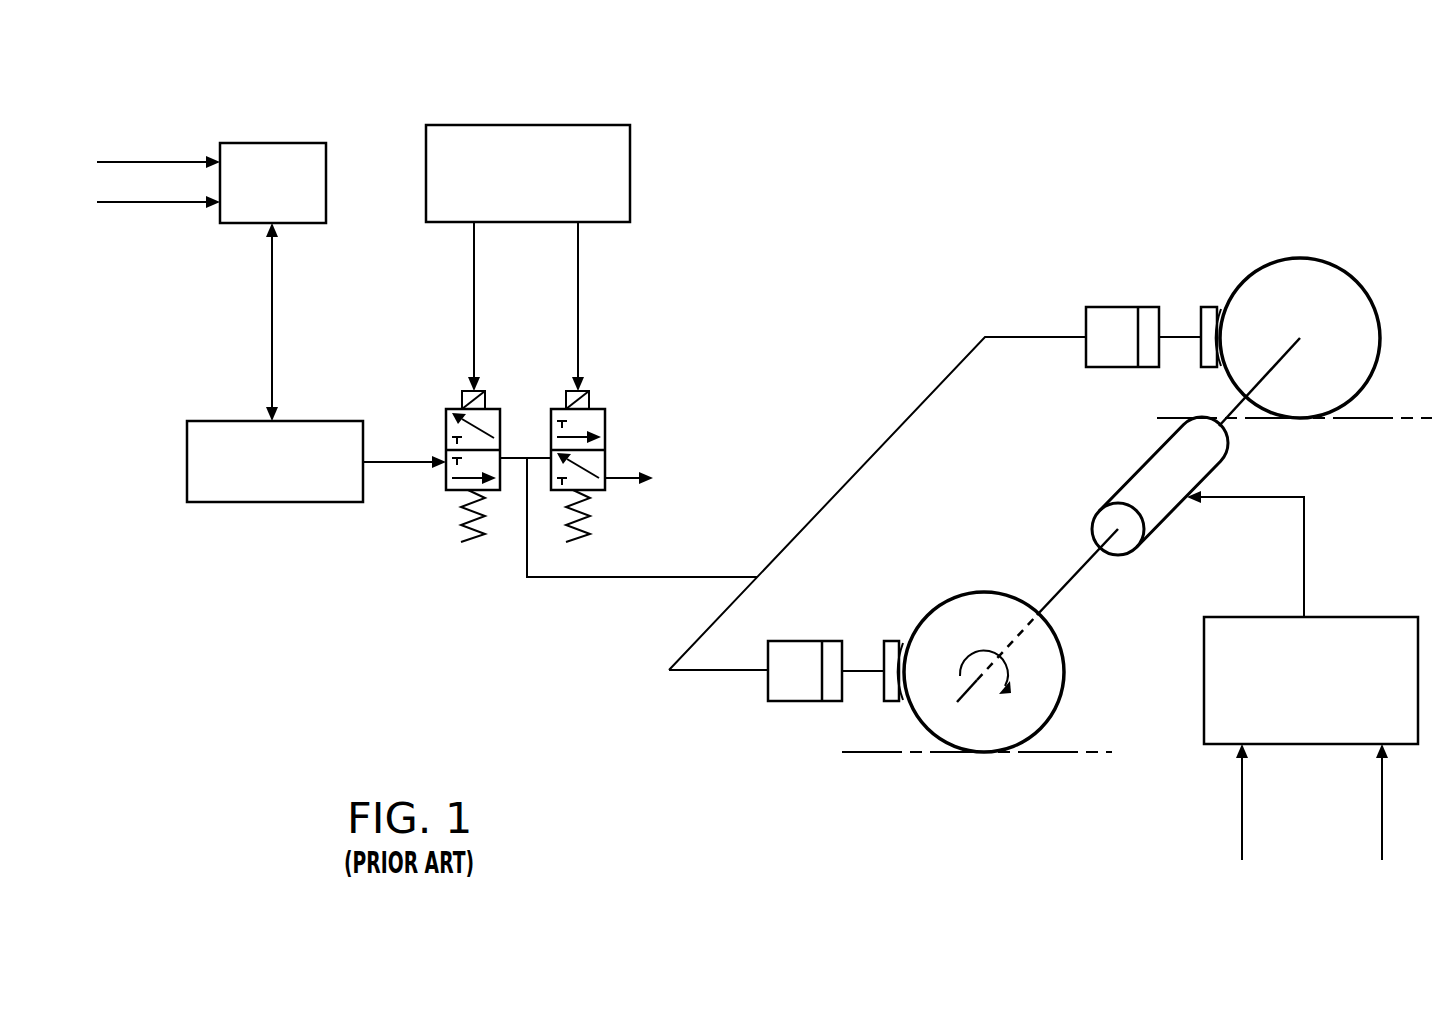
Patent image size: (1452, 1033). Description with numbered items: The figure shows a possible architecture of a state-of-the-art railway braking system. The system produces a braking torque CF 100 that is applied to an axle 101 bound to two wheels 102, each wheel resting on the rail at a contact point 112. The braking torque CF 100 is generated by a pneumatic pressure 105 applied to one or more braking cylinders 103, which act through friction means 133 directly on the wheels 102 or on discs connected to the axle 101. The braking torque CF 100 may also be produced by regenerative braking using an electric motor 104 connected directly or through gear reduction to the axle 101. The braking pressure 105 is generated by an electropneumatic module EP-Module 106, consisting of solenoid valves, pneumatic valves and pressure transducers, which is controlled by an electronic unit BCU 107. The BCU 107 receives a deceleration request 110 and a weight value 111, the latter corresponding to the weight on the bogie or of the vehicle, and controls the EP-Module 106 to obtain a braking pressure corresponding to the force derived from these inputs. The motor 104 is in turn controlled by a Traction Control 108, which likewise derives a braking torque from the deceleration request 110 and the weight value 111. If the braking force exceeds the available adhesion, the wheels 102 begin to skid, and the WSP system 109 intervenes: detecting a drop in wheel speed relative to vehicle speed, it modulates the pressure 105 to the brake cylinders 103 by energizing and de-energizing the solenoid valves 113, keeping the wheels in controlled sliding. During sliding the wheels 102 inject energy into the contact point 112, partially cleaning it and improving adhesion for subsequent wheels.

The braking torque CF 100 is at (990, 648).
The axle 101 is at (1282, 358).
The wheels 102 is at (1328, 280).
The braking cylinders 103 is at (1102, 307).
The electric motor 104 is at (1140, 475).
The pneumatic pressure 105 is at (400, 460).
The electropneumatic module EP-Module 106 is at (248, 503).
The electronic unit BCU 107 is at (287, 143).
The Traction Control 108 is at (1360, 617).
The WSP (Wheel Slide Protection) system 109 is at (582, 125).
The deceleration request 110 is at (156, 161).
The weight value 111 is at (158, 204).
The contact point 112 is at (1300, 418).
The solenoid valves 113 is at (600, 409).
The friction means 133 is at (1207, 307).